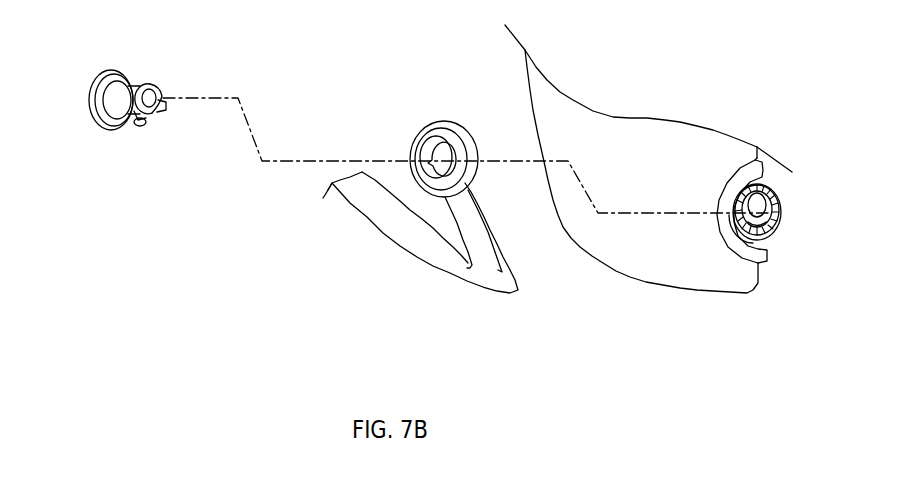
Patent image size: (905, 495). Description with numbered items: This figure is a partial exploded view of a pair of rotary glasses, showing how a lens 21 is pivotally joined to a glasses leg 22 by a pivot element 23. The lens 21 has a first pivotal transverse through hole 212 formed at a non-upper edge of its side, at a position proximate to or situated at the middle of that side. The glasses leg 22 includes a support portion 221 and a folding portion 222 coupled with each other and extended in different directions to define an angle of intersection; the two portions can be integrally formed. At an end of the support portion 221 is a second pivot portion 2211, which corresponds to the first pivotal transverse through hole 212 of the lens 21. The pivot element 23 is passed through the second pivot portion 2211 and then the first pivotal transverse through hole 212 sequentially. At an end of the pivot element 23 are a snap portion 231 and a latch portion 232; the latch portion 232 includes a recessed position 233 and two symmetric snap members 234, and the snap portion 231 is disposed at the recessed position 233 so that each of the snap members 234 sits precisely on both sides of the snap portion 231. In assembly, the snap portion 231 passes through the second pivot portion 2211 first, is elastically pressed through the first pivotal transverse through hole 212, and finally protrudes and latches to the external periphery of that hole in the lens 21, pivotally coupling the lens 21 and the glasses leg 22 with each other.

The lens 21 is at (668, 138).
The first pivotal transverse through hole 212 is at (773, 222).
The glasses leg 22 is at (441, 237).
The support portion 221 is at (490, 252).
The folding portion 222 is at (367, 207).
The second pivot portion 2211 is at (445, 137).
The pivot element 23 is at (122, 105).
The snap portion 231 is at (145, 124).
The latch portion 232 is at (150, 90).
The recessed position 233 is at (115, 93).
The snap members 234 is at (130, 105).